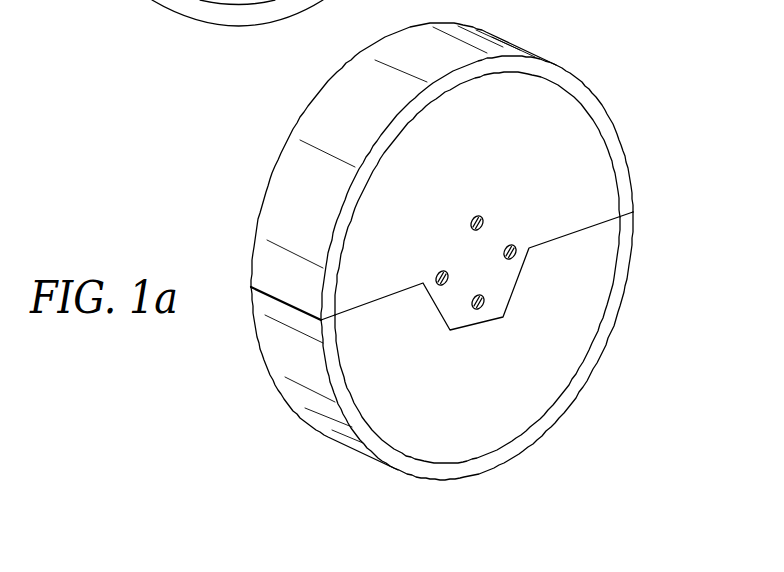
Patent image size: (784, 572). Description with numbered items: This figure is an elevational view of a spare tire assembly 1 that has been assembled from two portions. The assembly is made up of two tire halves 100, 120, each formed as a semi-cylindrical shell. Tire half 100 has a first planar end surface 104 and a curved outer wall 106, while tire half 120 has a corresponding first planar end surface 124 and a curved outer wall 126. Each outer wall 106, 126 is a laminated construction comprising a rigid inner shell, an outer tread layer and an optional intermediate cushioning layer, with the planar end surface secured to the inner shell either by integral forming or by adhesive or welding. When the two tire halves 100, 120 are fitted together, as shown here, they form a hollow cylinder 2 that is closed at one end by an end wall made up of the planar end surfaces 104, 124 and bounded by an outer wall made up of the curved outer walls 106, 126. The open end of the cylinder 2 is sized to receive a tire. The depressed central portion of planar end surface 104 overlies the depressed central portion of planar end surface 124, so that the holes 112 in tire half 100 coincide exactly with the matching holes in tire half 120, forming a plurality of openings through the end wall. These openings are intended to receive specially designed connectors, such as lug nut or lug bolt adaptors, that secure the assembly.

The spare tire assembly 1 is at (87, 37).
The cylinder 2 is at (231, 211).
The tire half 100 is at (652, 165).
The first planar end surface 104 is at (548, 110).
The curved outer wall 106 is at (303, 123).
The holes 112 is at (509, 243).
The tire half 120 is at (657, 268).
The first planar end surface 124 is at (545, 388).
The curved outer wall 126 is at (301, 393).